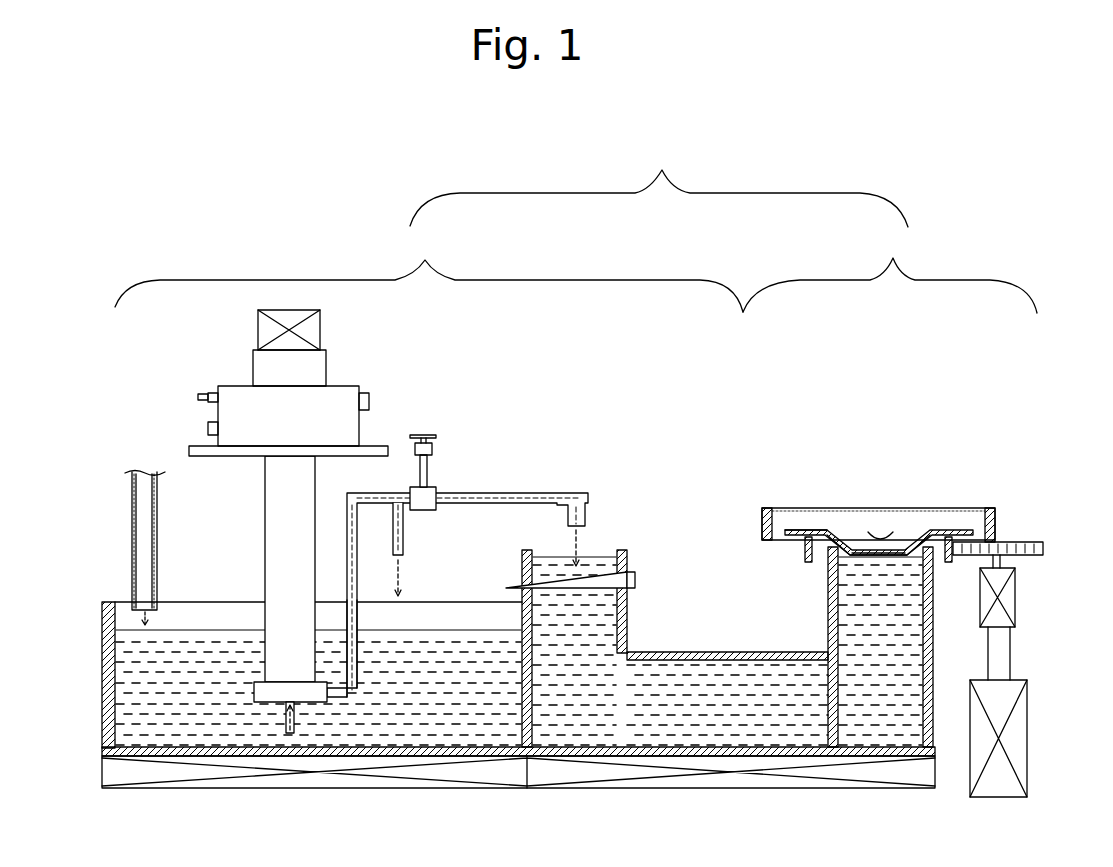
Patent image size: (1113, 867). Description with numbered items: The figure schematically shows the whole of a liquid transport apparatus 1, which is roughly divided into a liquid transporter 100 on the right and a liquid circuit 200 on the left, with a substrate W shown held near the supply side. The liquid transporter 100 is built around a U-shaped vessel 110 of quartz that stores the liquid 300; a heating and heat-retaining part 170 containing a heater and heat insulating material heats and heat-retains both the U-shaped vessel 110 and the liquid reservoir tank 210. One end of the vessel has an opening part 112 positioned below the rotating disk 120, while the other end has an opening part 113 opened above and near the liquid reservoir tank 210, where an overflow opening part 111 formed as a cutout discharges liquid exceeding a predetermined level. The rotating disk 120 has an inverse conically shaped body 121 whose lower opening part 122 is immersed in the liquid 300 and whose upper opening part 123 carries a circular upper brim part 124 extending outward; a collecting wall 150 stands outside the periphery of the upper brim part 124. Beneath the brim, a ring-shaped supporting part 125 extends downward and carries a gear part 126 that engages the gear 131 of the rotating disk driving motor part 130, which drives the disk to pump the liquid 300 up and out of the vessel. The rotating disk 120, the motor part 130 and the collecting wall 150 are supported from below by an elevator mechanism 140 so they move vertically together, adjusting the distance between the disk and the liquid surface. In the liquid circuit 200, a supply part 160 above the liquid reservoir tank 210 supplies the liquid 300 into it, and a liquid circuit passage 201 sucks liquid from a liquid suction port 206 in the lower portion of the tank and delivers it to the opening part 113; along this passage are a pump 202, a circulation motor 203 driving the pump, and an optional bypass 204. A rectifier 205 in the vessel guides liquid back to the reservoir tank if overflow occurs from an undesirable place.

The liquid transport apparatus 1 is at (668, 161).
The liquid transporter 100 is at (890, 272).
The liquid circuit 200 is at (429, 272).
The U-shaped vessel 110 is at (640, 652).
The overflow opening part 111 is at (522, 560).
The opening part 112 is at (900, 553).
The opening part 113 is at (600, 550).
The rotating disk 120 is at (966, 530).
The inverse conically shaped body 121 is at (857, 548).
The opening part 122 is at (845, 572).
The opening part 123 is at (888, 530).
The upper brim part 124 is at (798, 537).
The supporting part 125 is at (805, 548).
The gear part 126 is at (946, 556).
The rotating disk driving motor part 130 is at (1010, 598).
The gear 131 is at (1043, 548).
The elevator mechanism 140 is at (1017, 733).
The collecting wall 150 is at (781, 508).
The supply part 160 is at (132, 500).
The heating and heat-retaining part 170 is at (560, 770).
The liquid circuit passage 201 is at (357, 660).
The pump 202 is at (342, 392).
The circulation motor 203 is at (258, 333).
The bypass 204 is at (393, 533).
The rectifier 205 is at (632, 572).
The liquid suction port 206 is at (290, 703).
The liquid reservoir tank 210 is at (410, 760).
The liquid 300 is at (540, 566).
The substrate W is at (127, 600).